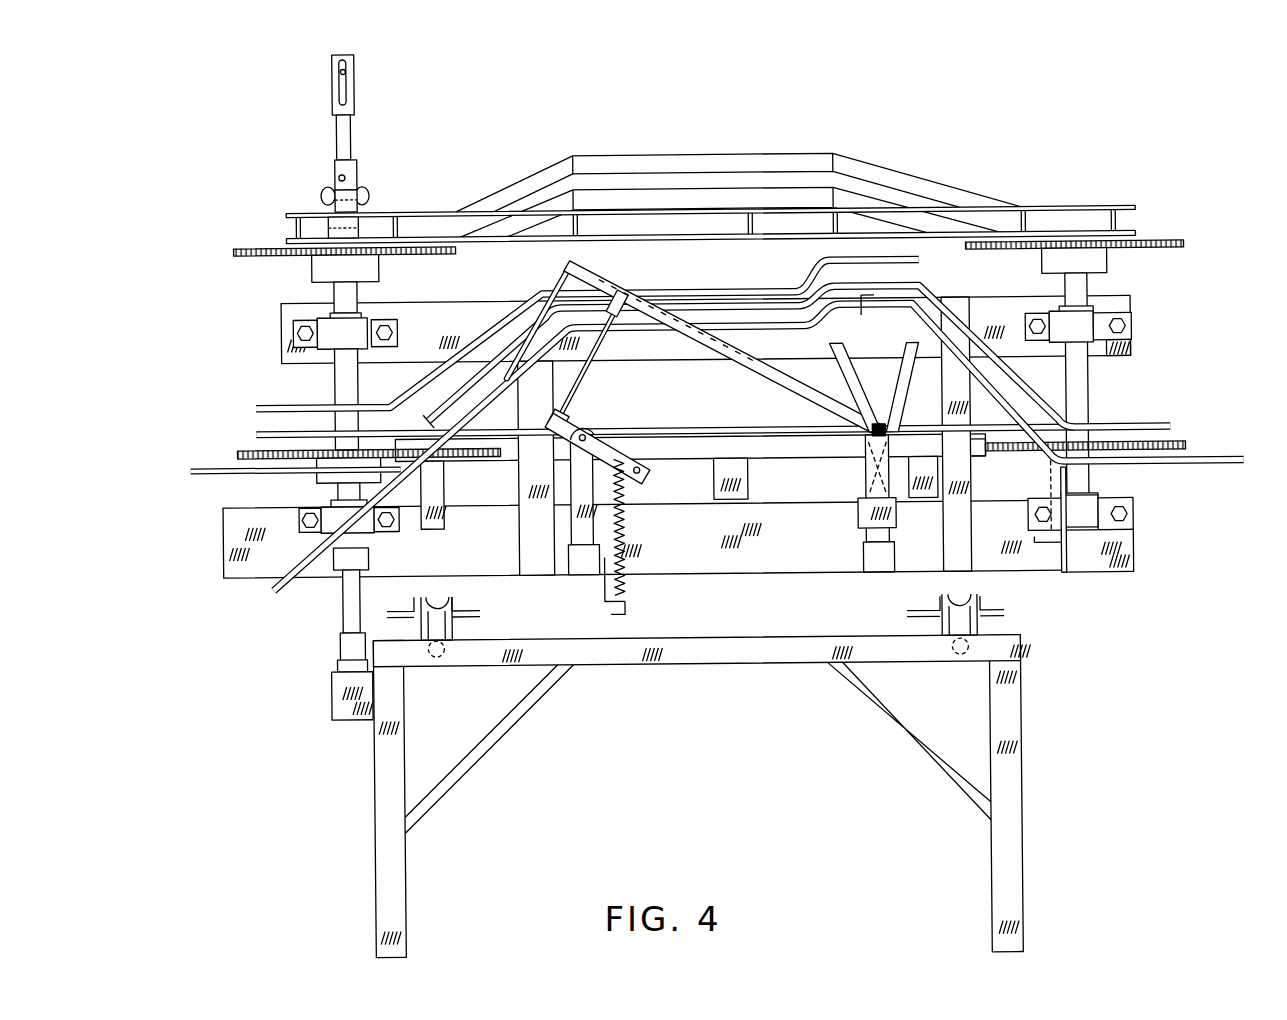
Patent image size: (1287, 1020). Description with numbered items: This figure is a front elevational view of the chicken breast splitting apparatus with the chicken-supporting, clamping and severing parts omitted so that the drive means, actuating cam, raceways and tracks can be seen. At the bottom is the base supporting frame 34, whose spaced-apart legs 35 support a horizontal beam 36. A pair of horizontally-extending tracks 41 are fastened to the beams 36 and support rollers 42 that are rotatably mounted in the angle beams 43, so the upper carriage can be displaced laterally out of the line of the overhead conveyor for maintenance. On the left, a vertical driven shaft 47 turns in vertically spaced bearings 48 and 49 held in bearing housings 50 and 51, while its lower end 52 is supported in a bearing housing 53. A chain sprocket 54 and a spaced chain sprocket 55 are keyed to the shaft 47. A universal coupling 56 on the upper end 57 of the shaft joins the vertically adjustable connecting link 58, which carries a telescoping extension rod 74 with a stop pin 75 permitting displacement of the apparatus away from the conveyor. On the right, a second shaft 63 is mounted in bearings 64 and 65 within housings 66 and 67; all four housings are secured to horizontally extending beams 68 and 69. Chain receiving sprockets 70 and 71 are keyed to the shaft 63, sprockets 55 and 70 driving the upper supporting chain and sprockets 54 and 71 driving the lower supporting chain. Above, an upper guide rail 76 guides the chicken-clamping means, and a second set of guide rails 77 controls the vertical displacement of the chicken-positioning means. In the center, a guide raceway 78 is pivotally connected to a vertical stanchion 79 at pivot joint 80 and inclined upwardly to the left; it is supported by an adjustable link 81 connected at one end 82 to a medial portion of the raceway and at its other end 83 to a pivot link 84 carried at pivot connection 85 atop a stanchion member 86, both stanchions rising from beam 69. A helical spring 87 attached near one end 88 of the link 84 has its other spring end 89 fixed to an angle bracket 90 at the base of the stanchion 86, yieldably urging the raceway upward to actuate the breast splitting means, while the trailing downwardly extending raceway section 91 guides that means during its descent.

The base supporting frame 34 is at (742, 796).
The leg 35 is at (403, 906).
The horizontal beam 36 is at (702, 668).
The horizontally-extending tracks 41 is at (434, 658).
The rollers 42 is at (438, 610).
The angle beams 43 is at (397, 612).
The vertical driven shaft 47 is at (341, 598).
The bearing 48 is at (334, 313).
The bearing 49 is at (330, 503).
The bearing housing 50 is at (330, 340).
The bearing housing 51 is at (325, 522).
The lower end of shaft 52 is at (338, 660).
The bearing housing 53 is at (340, 693).
The chain sprocket 54 is at (240, 452).
The chain sprockets 55 is at (233, 251).
The universal coupling 56 is at (358, 172).
The upper end of shaft 57 is at (330, 230).
The vertically adjustable connecting link 58 is at (353, 112).
The shaft 63 is at (1080, 400).
The bearing 64 is at (1090, 318).
The bearing 65 is at (1095, 504).
The bearing housing 66 is at (1105, 336).
The bearing housing 67 is at (1128, 537).
The horizontally extending beam 68 is at (1130, 355).
The horizontally extending beam 69 is at (1132, 564).
The chain receiving sprocket 70 is at (1187, 252).
The chain receiving sprocket 71 is at (1192, 455).
The telescoping extension rod 74 is at (351, 92).
The stop pin 75 is at (356, 71).
The upper guide rail 76 is at (926, 190).
The second set of guide rails 77 is at (915, 336).
The guide raceway 78 is at (770, 388).
The vertical stanchion 79 is at (870, 524).
The pivot joint 80 is at (878, 430).
The adjustable link 81 is at (600, 362).
The end of adjustable link 82 is at (621, 300).
The other end of adjustable link 83 is at (570, 412).
The pivot link 84 is at (613, 444).
The pivot connection 85 is at (590, 432).
The stanchion member 86 is at (595, 537).
The helical spring 87 is at (625, 492).
The end of link 88 is at (650, 460).
The spring end 89 is at (630, 606).
The angle bracket 90 is at (602, 592).
The trailing downwardly extending raceway section 91 is at (537, 312).